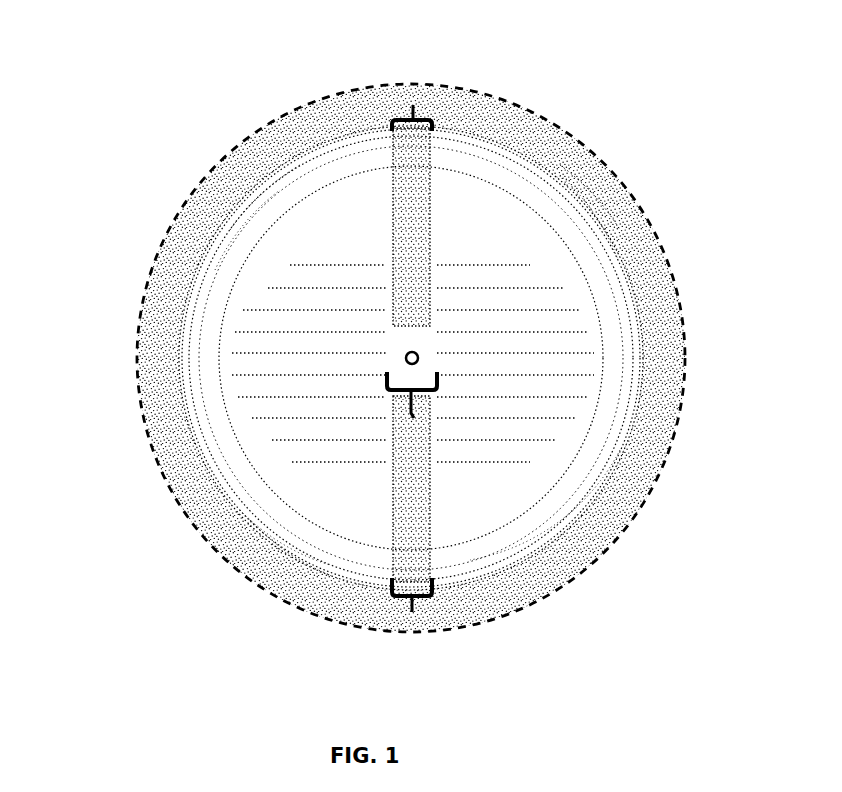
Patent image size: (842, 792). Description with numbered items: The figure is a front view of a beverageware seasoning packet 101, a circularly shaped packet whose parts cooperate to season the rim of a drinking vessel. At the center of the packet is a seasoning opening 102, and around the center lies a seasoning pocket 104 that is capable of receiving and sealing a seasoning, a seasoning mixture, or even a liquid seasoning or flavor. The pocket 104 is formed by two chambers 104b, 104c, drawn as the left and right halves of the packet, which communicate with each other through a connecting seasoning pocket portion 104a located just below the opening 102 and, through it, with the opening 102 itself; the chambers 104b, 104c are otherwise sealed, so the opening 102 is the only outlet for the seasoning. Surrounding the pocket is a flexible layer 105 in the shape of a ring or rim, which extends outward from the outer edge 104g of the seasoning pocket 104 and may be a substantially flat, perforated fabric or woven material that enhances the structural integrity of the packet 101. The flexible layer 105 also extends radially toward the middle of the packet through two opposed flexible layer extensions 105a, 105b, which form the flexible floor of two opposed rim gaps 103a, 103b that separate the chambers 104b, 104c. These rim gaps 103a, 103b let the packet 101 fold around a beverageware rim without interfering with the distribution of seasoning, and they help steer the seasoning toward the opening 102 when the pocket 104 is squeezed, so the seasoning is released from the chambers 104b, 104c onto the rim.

The beverageware seasoning packet 101 is at (114, 89).
The seasoning opening 102 is at (589, 330).
The rim gap 103a is at (414, 106).
The rim gap 103b is at (412, 612).
The seasoning pocket 104 is at (602, 225).
The connecting seasoning pocket portion 104a is at (413, 418).
The pocket chamber 104b is at (411, 358).
The pocket chamber 104c is at (515, 363).
The outer edge 104g is at (627, 277).
The flexible layer 105 is at (640, 472).
The flexible layer extension 105a is at (405, 190).
The flexible layer extension 105b is at (410, 480).